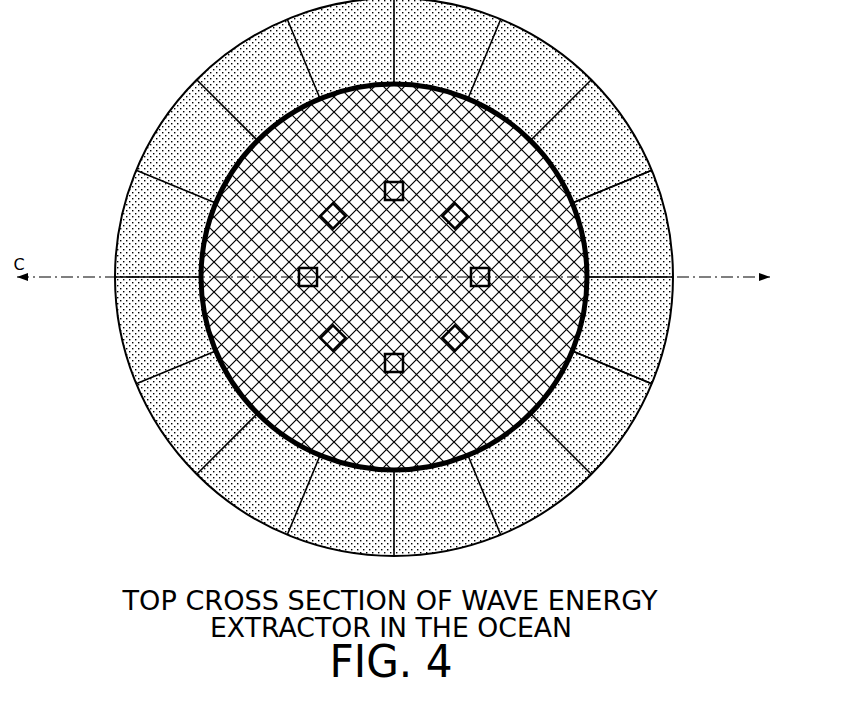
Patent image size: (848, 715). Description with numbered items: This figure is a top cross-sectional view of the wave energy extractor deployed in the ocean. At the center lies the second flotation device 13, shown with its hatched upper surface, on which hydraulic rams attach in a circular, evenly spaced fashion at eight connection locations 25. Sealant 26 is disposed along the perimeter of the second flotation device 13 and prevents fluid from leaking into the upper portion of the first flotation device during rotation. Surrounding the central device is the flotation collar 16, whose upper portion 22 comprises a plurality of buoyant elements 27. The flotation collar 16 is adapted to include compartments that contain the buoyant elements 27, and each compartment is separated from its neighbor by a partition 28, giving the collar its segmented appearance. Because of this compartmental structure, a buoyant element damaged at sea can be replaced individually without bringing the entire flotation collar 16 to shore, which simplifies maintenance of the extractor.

The second flotation device 13 is at (511, 115).
The flotation collar 16 is at (526, 43).
The upper portion of flotation collar 22 is at (608, 138).
The connection location 25 is at (479, 266).
The sealant 26 is at (586, 330).
The buoyant element 27 is at (152, 190).
The partition 28 is at (640, 181).